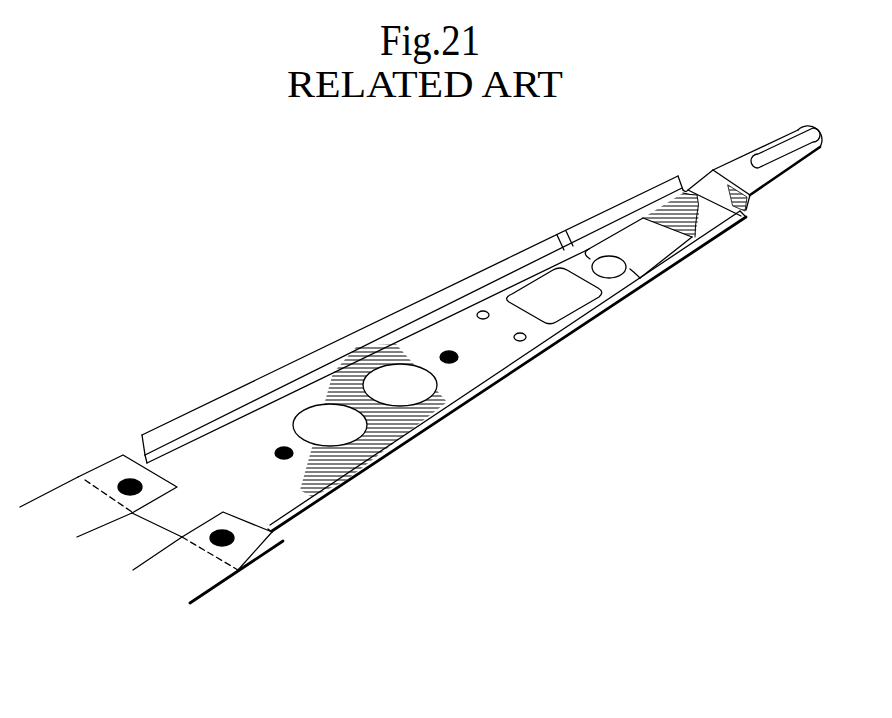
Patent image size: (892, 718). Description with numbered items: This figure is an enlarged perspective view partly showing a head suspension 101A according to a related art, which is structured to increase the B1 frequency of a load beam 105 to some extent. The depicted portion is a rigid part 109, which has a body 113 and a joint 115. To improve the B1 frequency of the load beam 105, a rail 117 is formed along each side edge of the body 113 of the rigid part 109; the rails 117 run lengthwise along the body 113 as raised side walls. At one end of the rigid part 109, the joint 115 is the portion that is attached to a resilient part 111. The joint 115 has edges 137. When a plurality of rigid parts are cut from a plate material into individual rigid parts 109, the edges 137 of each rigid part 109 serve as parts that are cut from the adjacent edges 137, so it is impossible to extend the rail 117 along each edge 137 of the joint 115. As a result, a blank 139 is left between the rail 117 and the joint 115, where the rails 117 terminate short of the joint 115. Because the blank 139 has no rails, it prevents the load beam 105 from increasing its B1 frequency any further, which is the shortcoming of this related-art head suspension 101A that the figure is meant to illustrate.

The head suspension 101A is at (378, 240).
The load beam 105 is at (462, 319).
The rigid part 109 is at (563, 260).
The resilient part 111 is at (215, 582).
The body 113 is at (465, 373).
The joint 115 is at (178, 523).
The rail 117 is at (270, 374).
The edge 137 is at (100, 458).
The blank 139 is at (142, 461).